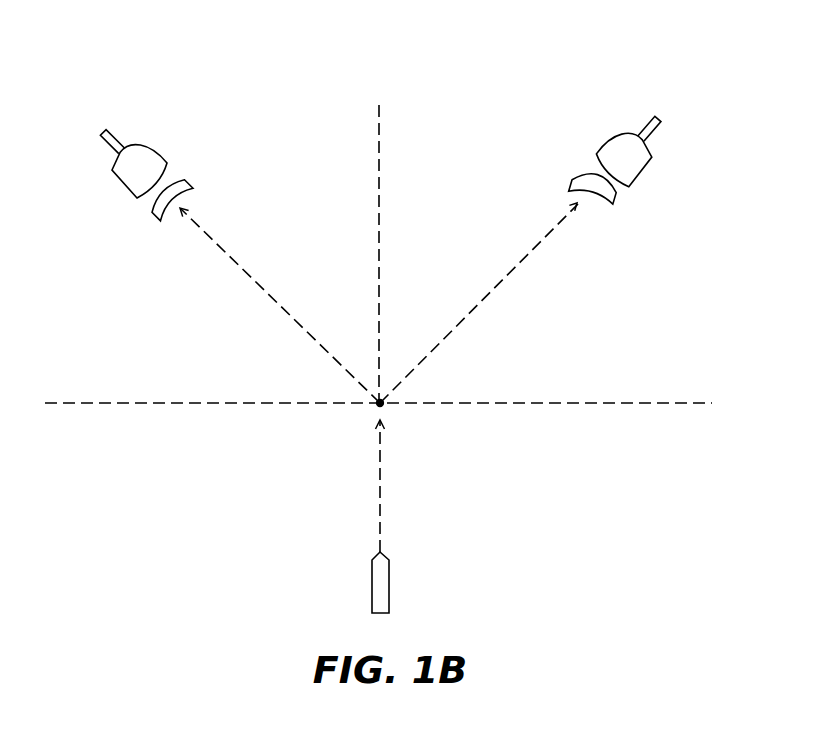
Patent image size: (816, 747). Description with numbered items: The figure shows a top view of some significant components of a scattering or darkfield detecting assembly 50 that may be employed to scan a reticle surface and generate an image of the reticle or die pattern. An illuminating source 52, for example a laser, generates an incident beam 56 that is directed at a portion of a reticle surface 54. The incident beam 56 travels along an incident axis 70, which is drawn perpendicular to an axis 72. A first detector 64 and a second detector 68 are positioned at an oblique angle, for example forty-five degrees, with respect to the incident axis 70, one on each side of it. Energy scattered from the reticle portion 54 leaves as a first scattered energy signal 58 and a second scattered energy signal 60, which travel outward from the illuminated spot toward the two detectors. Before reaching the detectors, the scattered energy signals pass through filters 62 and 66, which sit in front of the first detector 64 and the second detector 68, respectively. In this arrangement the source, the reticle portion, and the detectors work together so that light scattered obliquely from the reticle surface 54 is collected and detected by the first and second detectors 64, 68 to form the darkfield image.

The darkfield detecting assembly 50 is at (102, 70).
The illuminating source 52 is at (390, 583).
The reticle surface 54 is at (383, 405).
The incident beam 56 is at (378, 490).
The first scattered energy signal 58 is at (523, 258).
The second scattered energy signal 60 is at (240, 263).
The filter 62 is at (152, 218).
The first detector 64 is at (158, 152).
The filter 66 is at (612, 210).
The second detector 68 is at (612, 138).
The incident axis 70 is at (380, 127).
The axis 72 is at (663, 402).